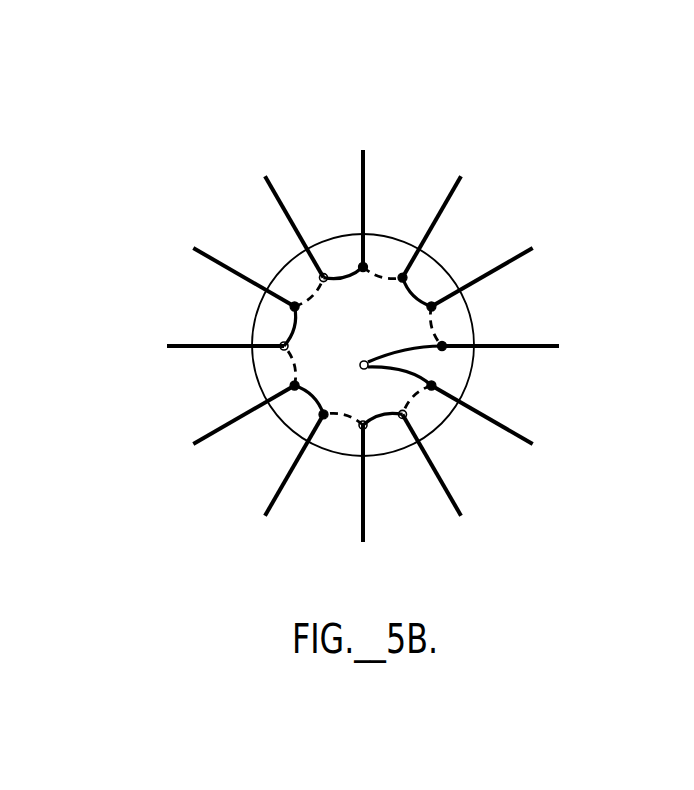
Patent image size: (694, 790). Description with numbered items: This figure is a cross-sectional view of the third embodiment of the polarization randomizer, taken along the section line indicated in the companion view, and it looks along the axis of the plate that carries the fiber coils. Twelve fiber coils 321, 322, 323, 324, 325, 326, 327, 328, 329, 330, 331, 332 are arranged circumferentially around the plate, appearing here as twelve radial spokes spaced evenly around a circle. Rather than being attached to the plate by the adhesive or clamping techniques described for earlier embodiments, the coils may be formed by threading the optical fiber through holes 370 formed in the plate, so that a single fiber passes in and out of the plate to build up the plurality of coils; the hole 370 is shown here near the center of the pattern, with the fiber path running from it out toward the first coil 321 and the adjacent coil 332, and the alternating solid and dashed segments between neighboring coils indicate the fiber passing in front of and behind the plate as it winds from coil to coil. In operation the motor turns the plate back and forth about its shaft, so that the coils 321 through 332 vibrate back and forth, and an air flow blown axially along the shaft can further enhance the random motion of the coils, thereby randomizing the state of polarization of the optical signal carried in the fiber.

The fiber coil 321 is at (530, 348).
The fiber coil 322 is at (512, 264).
The fiber coil 323 is at (458, 198).
The fiber coil 324 is at (372, 160).
The fiber coil 325 is at (280, 190).
The fiber coil 326 is at (210, 258).
The fiber coil 327 is at (190, 346).
The fiber coil 328 is at (213, 425).
The fiber coil 329 is at (272, 492).
The fiber coil 330 is at (360, 525).
The fiber coil 331 is at (445, 497).
The fiber coil 332 is at (518, 438).
The through hole 370 is at (440, 308).